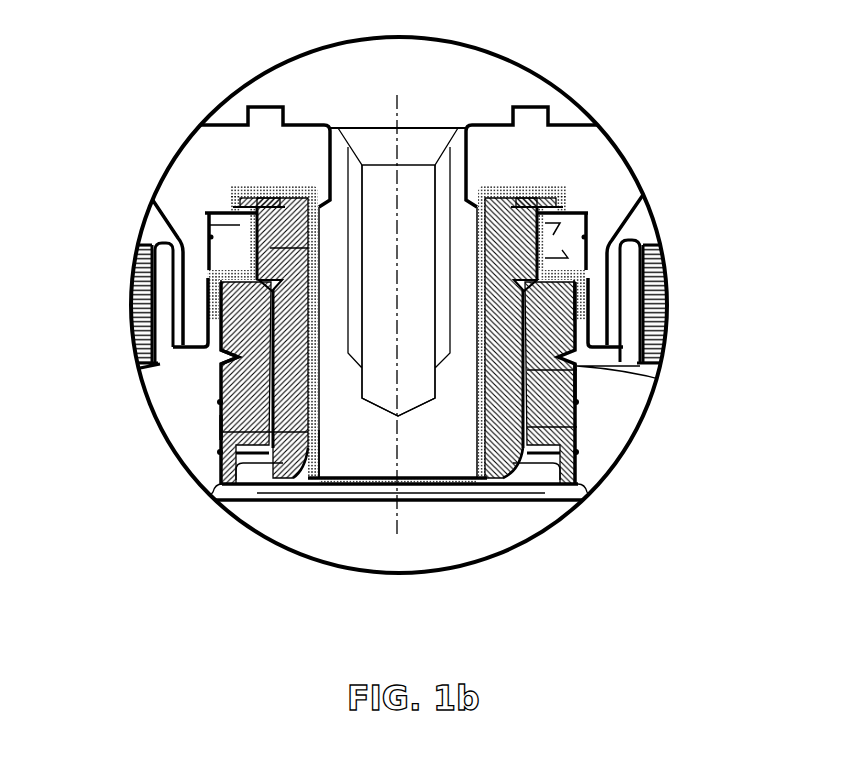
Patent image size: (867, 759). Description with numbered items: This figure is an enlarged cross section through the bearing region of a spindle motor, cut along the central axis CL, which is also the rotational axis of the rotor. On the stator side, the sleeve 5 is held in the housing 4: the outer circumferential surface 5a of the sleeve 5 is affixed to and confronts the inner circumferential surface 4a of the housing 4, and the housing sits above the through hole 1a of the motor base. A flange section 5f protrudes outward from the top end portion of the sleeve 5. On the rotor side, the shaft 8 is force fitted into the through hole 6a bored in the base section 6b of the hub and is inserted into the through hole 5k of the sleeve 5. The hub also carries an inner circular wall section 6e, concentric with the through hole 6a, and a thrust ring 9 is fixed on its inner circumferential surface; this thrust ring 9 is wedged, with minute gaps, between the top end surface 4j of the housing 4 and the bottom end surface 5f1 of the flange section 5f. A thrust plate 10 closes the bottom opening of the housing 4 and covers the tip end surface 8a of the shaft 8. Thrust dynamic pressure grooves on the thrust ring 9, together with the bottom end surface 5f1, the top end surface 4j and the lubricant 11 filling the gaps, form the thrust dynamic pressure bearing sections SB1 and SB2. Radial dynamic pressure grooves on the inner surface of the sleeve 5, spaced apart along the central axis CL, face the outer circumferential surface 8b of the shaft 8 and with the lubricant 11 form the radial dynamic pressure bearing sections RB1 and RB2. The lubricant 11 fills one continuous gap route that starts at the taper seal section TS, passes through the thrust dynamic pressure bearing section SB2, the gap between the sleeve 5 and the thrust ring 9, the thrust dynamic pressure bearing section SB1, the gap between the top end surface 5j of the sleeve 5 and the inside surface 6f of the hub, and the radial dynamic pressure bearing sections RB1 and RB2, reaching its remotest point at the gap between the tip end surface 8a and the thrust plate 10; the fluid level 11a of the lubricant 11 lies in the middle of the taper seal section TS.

The through hole 1a is at (583, 498).
The housing 4 is at (580, 413).
The inner circumferential surface 4a is at (578, 427).
The top end surface 4j is at (586, 276).
The sleeve 5 is at (525, 460).
The outer circumferential surface 5a is at (577, 380).
The flange section 5f is at (245, 197).
The bottom end surface 5f1 is at (250, 206).
The top end surface 5j is at (237, 189).
The through hole 5k is at (558, 442).
The through hole 6a is at (517, 127).
The base section 6b is at (470, 140).
The inner circular wall section 6e is at (197, 333).
The inside surface 6f is at (532, 177).
The shaft 8 is at (452, 430).
The tip end surface 8a is at (410, 455).
The outer circumferential surface 8b is at (352, 462).
The thrust ring 9 is at (208, 213).
The thrust plate 10 is at (325, 485).
The lubricant 11 is at (600, 292).
The fluid level 11a is at (597, 370).
The radial dynamic pressure bearing section RB1 is at (223, 224).
The radial dynamic pressure bearing section RB2 is at (222, 427).
The thrust dynamic pressure bearing section SB1 is at (578, 212).
The thrust dynamic pressure bearing section SB2 is at (575, 250).
The taper seal section TS is at (215, 347).
The central axis CL is at (395, 302).